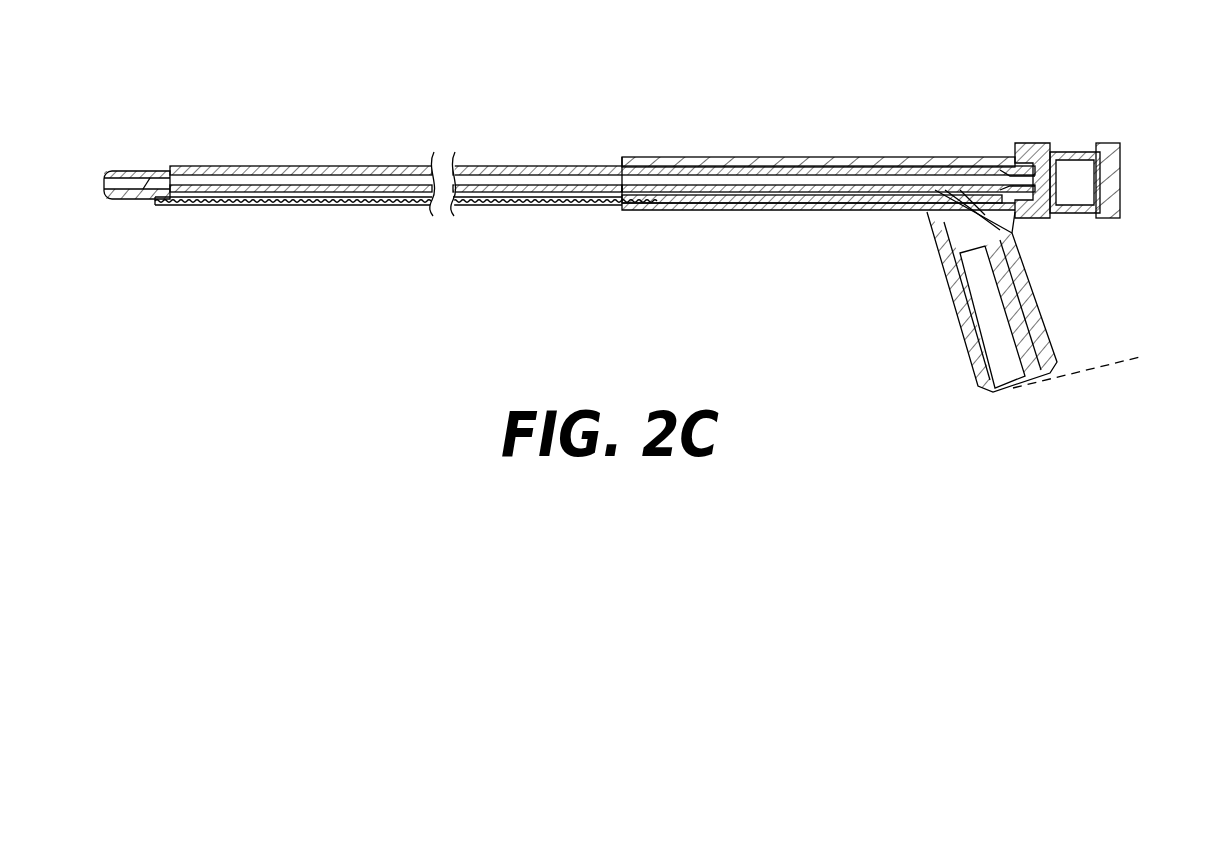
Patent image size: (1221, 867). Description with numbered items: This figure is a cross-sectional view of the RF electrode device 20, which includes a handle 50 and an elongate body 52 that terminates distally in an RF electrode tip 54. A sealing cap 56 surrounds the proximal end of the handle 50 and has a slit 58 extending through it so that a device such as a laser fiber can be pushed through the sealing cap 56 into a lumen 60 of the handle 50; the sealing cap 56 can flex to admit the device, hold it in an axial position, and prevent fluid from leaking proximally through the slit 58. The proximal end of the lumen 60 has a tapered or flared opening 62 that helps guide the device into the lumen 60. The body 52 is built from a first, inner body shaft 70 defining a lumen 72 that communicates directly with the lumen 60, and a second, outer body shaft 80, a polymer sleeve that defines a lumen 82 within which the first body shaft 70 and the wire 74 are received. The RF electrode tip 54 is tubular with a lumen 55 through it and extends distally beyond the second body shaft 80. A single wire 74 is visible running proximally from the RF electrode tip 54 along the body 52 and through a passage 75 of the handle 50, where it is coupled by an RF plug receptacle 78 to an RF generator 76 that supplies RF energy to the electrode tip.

The RF electrode device 20 is at (926, 128).
The handle 50 is at (776, 157).
The body 52 is at (508, 125).
The RF electrode tip 54 is at (115, 172).
The lumen 55 is at (145, 182).
The sealing cap 56 is at (1077, 151).
The slit 58 is at (1108, 183).
The lumen 60 is at (987, 176).
The flared opening 62 is at (1043, 164).
The first body shaft 70 is at (594, 204).
The lumen 72 is at (549, 193).
The wire 74 is at (280, 206).
The passage 75 is at (858, 190).
The RF generator 76 is at (1105, 362).
The RF plug receptacle 78 is at (1013, 234).
The second body shaft 80 is at (360, 166).
The lumen 82 is at (390, 202).